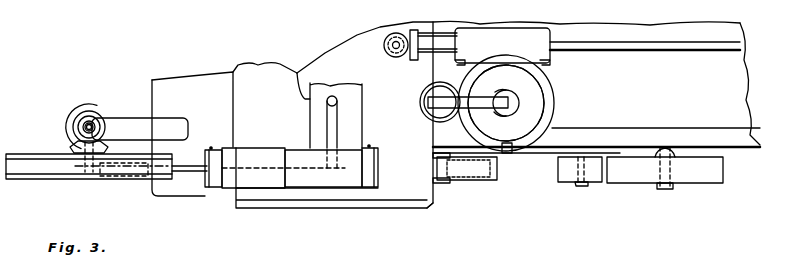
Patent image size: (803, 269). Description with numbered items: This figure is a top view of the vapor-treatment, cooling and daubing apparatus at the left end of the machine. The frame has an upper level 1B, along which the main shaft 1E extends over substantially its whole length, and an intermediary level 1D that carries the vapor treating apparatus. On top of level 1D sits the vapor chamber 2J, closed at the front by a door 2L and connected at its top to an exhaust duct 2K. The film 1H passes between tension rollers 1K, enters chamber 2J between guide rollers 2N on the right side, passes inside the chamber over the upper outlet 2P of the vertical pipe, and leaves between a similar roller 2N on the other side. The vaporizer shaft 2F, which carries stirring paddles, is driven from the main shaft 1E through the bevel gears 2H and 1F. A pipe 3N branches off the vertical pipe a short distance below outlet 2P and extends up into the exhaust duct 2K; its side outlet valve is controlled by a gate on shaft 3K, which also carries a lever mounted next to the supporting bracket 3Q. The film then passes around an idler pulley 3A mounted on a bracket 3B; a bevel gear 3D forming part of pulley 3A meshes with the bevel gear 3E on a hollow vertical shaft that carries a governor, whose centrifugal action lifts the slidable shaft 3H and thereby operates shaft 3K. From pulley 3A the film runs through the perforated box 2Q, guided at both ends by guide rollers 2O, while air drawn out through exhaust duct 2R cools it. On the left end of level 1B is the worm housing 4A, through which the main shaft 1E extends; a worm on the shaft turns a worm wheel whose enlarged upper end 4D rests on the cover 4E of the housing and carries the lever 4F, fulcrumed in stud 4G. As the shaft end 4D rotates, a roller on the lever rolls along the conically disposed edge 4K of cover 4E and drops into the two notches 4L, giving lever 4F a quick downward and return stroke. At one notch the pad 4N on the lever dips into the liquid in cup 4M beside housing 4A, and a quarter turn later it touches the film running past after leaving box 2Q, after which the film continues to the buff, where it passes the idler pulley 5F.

The upper level 1B is at (655, 84).
The intermediary level 1D is at (192, 134).
The main shaft 1E is at (738, 44).
The bevel gear 1F is at (412, 58).
The film 1H is at (477, 181).
The tension rollers 1K is at (568, 181).
The shaft 2F is at (393, 56).
The bevel gear 2H is at (392, 46).
The vapor chamber 2J is at (333, 115).
The exhaust duct 2K is at (298, 72).
The door 2L is at (318, 206).
The guide rollers 2N is at (438, 183).
The guide rollers 2O is at (208, 186).
The upper outlet 2P is at (340, 162).
The box 2Q is at (323, 168).
The exhaust duct 2R is at (255, 182).
The idler pulley 3A is at (89, 160).
The bracket 3B is at (140, 129).
The bevel gear 3D is at (73, 143).
The bevel gear 3E is at (80, 120).
The shaft 3H is at (97, 120).
The shaft 3K is at (78, 170).
The pipe 3N is at (338, 101).
The supporting bracket 3Q is at (110, 175).
The worm housing 4A is at (502, 46).
The upper end of shaft 4D is at (513, 110).
The cover 4E is at (506, 103).
The lever 4F is at (496, 83).
The stud 4G is at (505, 115).
The conically disposed edge 4K is at (555, 102).
The notches 4L is at (508, 153).
The cup 4M is at (424, 98).
The pad 4N is at (437, 118).
The idler pulley 5F is at (665, 168).